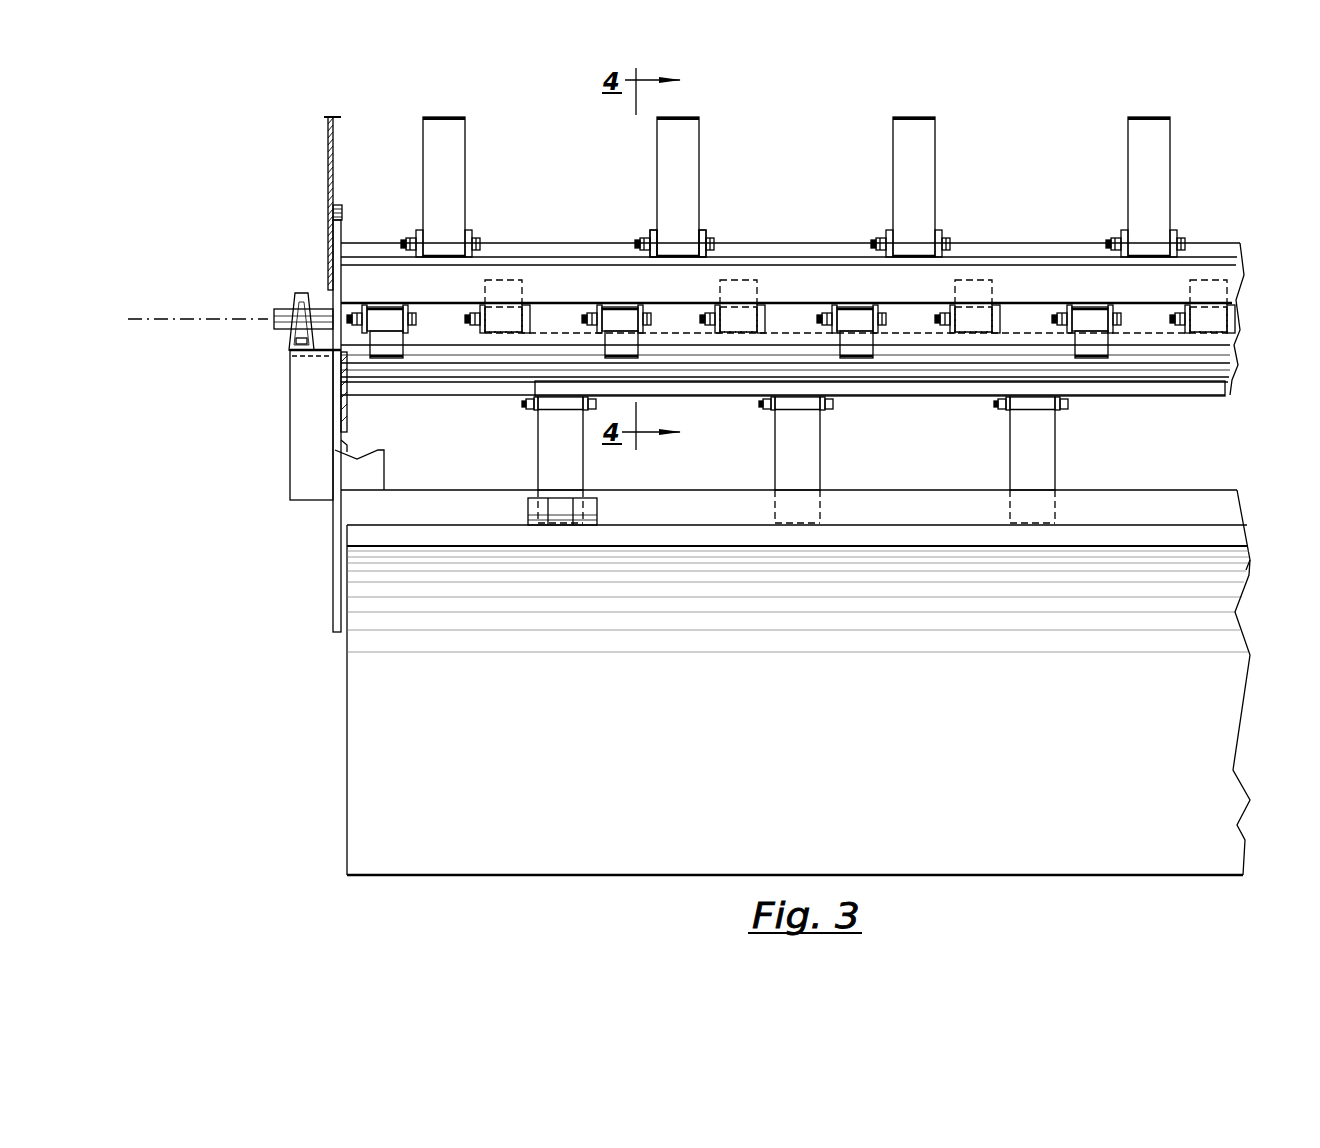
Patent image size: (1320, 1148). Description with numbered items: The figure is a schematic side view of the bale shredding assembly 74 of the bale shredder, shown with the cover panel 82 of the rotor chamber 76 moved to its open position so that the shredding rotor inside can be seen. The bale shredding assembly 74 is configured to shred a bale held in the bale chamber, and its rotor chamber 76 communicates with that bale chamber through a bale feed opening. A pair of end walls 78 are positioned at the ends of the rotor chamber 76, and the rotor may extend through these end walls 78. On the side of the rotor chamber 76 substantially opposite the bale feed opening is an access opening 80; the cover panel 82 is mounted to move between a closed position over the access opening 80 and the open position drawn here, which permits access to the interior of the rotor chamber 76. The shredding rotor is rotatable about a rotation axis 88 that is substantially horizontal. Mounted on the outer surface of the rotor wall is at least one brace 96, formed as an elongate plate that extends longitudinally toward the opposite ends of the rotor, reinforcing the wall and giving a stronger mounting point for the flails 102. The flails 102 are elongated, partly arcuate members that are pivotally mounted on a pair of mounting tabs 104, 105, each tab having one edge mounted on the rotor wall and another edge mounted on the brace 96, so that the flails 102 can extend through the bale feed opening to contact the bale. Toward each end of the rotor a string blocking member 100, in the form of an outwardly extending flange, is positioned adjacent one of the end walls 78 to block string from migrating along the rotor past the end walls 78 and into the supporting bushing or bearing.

The bale shredding assembly 74 is at (307, 197).
The rotor chamber 76 is at (383, 138).
The end walls 78 is at (328, 172).
The access opening 80 is at (382, 500).
The cover panel 82 is at (378, 735).
The rotation axis 88 is at (246, 318).
The brace 96 is at (571, 249).
The string blocking member 100 is at (333, 228).
The flails 102 is at (445, 168).
The mounting tab 104 is at (654, 232).
The mounting tab 105 is at (703, 232).